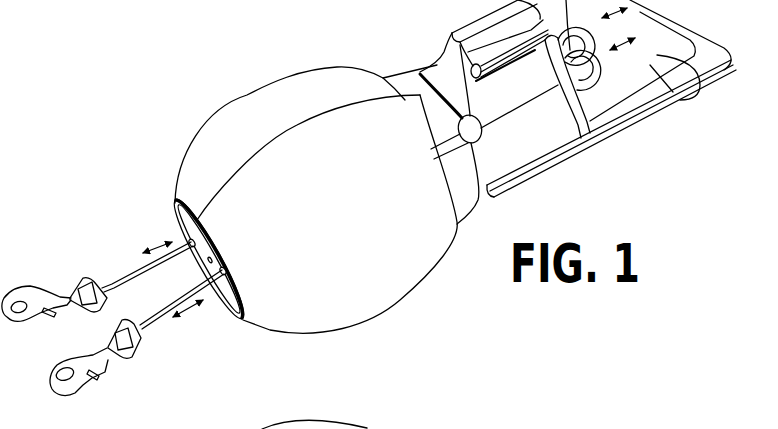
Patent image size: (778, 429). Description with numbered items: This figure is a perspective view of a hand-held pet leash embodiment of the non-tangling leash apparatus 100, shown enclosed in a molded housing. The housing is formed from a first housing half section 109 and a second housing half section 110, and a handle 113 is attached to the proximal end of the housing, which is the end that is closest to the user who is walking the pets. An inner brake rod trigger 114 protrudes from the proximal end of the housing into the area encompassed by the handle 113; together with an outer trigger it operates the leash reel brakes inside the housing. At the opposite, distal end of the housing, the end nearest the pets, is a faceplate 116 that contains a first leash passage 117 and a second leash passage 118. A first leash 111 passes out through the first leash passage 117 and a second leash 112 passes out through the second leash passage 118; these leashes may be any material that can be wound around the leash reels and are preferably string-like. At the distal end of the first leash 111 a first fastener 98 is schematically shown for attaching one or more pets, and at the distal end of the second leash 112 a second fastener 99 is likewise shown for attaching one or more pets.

The leash apparatus 100 is at (404, 48).
The first housing half section 109 is at (264, 122).
The second housing half section 110 is at (423, 220).
The handle 113 is at (693, 12).
The inner brake rod trigger 114 is at (597, 80).
The faceplate 116 is at (210, 248).
The first leash passage 117 is at (184, 236).
The second leash passage 118 is at (230, 297).
The first leash 111 is at (137, 272).
The second leash 112 is at (181, 301).
The first fastener 98 is at (23, 285).
The second fastener 99 is at (54, 353).